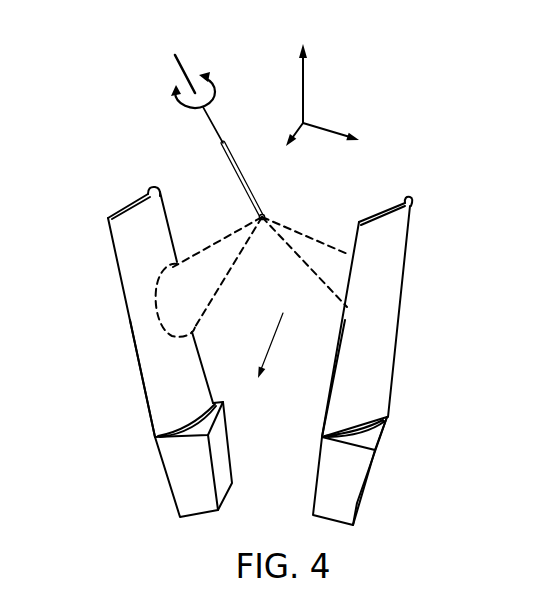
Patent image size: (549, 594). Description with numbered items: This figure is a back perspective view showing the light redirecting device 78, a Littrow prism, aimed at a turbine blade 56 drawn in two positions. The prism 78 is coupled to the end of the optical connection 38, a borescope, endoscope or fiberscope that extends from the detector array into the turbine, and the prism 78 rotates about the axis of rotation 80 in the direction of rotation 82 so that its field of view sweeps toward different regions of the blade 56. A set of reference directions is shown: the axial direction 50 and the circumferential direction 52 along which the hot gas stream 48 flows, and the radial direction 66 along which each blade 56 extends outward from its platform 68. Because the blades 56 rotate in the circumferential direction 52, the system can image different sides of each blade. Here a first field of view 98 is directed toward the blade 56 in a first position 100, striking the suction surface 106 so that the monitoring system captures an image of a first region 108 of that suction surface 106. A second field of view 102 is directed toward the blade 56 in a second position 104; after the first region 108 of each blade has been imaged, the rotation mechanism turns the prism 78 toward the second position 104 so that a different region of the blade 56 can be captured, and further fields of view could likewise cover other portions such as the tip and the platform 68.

The optical connection 38 is at (250, 192).
The hot gas stream 48 is at (270, 343).
The axial direction 50 is at (299, 121).
The circumferential direction 52 is at (330, 119).
The first stage blade 56 is at (150, 395).
The radial direction 66 is at (302, 84).
The platform 68 is at (208, 427).
The light redirecting device 78 is at (265, 215).
The axis of rotation 80 is at (182, 73).
The direction of rotation 82 is at (221, 80).
The first field of view 98 is at (210, 255).
The first position 100 is at (110, 186).
The second field of view 102 is at (313, 232).
The second position 104 is at (386, 196).
The suction surface 106 is at (127, 235).
The first region 108 is at (170, 267).